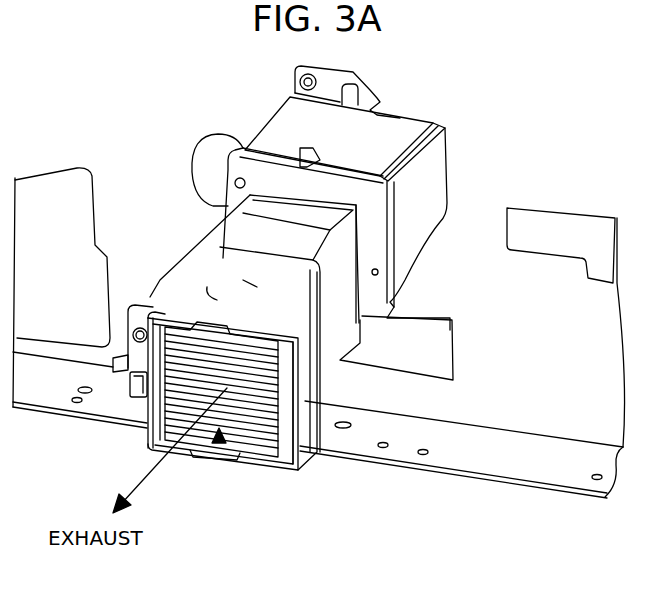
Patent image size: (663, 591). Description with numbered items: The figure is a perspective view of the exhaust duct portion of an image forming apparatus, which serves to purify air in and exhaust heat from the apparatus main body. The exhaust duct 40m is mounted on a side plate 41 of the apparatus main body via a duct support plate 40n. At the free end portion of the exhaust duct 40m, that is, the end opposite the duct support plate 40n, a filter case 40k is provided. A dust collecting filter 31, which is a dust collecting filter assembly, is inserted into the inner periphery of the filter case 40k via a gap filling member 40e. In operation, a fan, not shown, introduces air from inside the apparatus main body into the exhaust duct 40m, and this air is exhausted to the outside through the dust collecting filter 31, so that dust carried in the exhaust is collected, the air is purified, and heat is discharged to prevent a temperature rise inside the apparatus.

The dust collecting filter 31 is at (220, 430).
The gap filling member 40e is at (263, 450).
The filter case 40k is at (150, 430).
The exhaust duct 40m is at (225, 277).
The duct support plate 40n is at (450, 172).
The side plate 41 is at (483, 413).